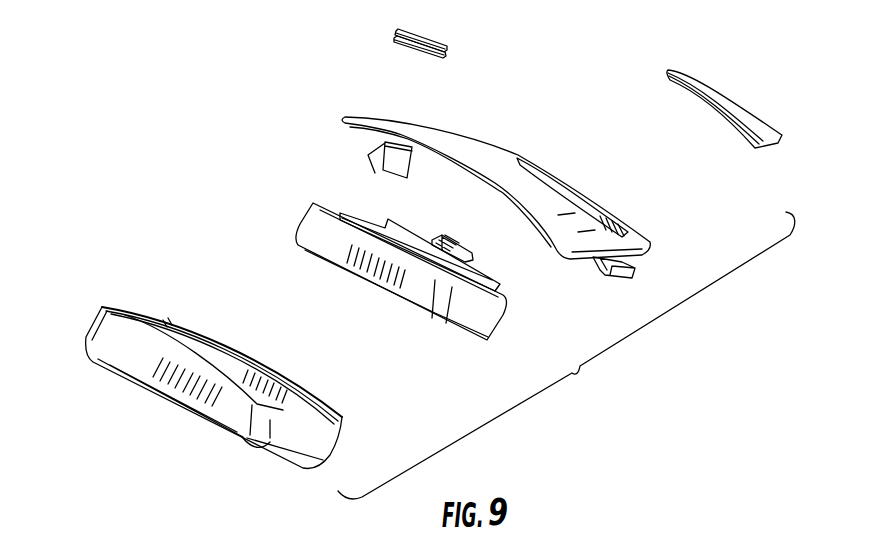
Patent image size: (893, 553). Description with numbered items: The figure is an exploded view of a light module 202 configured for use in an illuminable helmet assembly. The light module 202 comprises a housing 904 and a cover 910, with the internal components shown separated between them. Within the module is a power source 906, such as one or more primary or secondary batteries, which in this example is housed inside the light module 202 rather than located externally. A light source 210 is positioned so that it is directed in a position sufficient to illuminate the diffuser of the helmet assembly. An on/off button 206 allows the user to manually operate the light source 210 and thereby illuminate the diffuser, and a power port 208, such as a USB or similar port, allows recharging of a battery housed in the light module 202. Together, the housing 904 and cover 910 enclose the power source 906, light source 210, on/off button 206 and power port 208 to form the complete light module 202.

The light module 202 is at (566, 355).
The on/off button 206 is at (763, 126).
The power port 208 is at (423, 36).
The light source 210 is at (458, 244).
The housing 904 is at (127, 340).
The power source 906 is at (423, 285).
The cover 910 is at (590, 226).